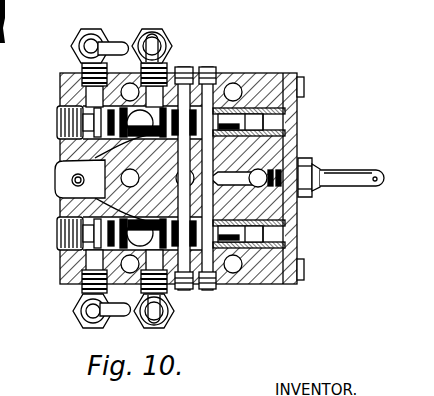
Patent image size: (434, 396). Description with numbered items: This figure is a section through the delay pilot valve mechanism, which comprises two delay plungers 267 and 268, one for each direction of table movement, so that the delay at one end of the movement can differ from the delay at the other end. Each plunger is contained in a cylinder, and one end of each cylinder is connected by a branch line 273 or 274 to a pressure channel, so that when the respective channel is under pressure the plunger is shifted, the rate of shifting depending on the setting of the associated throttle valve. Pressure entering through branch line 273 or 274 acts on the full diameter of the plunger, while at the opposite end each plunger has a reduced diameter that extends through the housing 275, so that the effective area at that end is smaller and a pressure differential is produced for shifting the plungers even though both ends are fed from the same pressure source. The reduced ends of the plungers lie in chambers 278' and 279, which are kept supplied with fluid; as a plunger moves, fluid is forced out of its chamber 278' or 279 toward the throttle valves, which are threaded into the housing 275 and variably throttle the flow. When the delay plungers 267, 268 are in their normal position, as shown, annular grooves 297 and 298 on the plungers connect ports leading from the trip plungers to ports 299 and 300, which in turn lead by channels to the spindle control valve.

The delay plunger 267 is at (250, 120).
The delay plunger 268 is at (265, 285).
The branch line 273 is at (118, 46).
The branch line 274 is at (84, 328).
The housing 275 is at (290, 73).
The chamber 278' is at (248, 144).
The chamber 279 is at (222, 288).
The annular groove 297 is at (60, 167).
The annular groove 298 is at (60, 192).
The port 299 is at (166, 100).
The port 300 is at (167, 276).